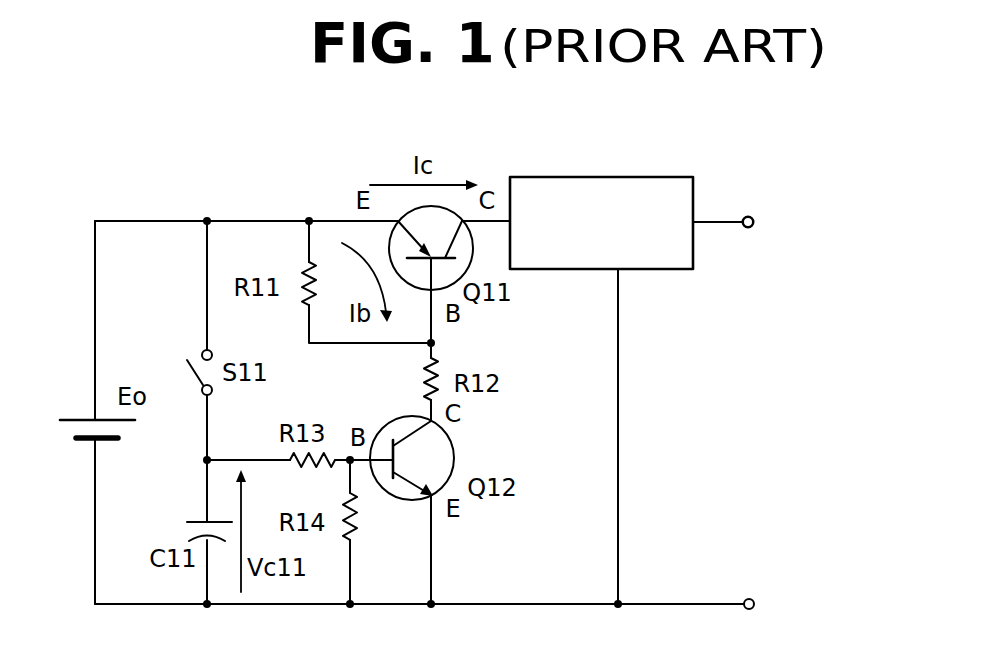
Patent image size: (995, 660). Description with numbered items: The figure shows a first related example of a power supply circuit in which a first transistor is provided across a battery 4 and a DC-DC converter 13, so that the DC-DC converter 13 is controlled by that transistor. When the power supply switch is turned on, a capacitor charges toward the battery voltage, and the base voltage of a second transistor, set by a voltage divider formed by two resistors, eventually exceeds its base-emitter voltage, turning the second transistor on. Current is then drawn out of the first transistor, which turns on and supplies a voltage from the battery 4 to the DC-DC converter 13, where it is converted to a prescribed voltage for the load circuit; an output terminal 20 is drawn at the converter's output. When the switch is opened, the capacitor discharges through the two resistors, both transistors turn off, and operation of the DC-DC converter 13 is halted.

The battery 4 is at (88, 445).
The DC-DC converter 13 is at (610, 176).
The output terminal 20 is at (748, 228).